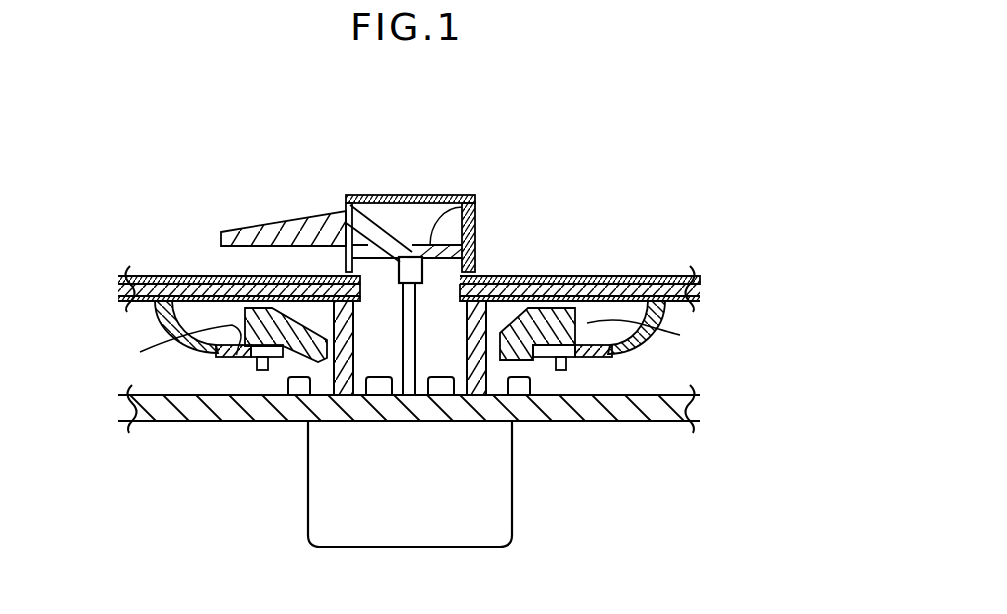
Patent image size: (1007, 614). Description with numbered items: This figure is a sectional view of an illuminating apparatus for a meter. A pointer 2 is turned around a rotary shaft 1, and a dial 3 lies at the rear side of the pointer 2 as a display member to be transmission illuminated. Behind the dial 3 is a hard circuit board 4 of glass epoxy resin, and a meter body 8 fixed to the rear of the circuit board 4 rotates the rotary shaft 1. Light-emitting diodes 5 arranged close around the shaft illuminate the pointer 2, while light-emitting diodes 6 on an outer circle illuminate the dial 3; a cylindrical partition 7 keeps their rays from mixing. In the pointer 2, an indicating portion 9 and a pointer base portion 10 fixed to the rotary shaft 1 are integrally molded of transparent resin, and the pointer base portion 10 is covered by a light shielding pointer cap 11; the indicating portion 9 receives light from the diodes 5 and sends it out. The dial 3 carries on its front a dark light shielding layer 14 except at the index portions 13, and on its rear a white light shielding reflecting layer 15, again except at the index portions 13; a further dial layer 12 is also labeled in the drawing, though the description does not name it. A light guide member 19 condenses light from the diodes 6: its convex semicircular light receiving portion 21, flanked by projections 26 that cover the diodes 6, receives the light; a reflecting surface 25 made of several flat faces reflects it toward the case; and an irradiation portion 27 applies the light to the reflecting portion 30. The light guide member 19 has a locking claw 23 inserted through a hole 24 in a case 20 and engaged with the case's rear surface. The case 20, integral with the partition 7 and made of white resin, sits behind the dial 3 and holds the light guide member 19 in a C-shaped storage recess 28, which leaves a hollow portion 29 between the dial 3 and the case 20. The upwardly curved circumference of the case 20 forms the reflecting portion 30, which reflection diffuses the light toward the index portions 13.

The rotary shaft 1 is at (402, 323).
The pointer 2 is at (432, 180).
The dial 3 is at (670, 270).
The circuit board 4 is at (572, 413).
The light-emitting diodes 5 is at (378, 386).
The light-emitting diodes 6 is at (300, 396).
The partition 7 is at (357, 322).
The meter body 8 is at (308, 532).
The indicating portion 9 is at (260, 232).
The pointer base portion 10 is at (476, 215).
The pointer cap 11 is at (450, 196).
The substrate 12 is at (163, 282).
The index portions 13 is at (200, 277).
The light shielding layer 14 is at (243, 278).
The light shielding reflecting layer 15 is at (195, 338).
The light guide member 19 is at (562, 310).
The case 20 is at (190, 355).
The light receiving portion 21 is at (318, 308).
The locking claw 23 is at (254, 362).
The hole 24 is at (608, 360).
The reflecting surface 25 is at (300, 262).
The projections 26 is at (268, 372).
The irradiation portion 27 is at (650, 333).
The storage recess 28 is at (213, 358).
The hollow portion 29 is at (590, 308).
The reflecting portion 30 is at (612, 352).